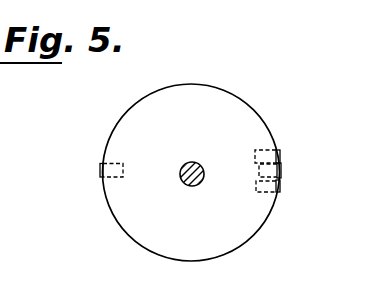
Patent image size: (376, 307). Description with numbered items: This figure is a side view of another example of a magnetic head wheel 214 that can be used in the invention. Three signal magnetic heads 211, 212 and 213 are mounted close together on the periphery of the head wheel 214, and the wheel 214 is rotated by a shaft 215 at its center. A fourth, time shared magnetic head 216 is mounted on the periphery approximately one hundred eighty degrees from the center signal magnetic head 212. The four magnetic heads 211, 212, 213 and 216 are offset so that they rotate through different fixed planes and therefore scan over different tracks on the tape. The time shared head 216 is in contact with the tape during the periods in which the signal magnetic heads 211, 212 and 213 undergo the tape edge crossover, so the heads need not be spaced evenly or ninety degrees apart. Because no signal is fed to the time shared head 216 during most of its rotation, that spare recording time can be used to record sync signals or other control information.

The signal magnetic head 211 is at (281, 152).
The center signal magnetic head 212 is at (282, 170).
The signal magnetic head 213 is at (282, 187).
The head wheel 214 is at (203, 84).
The shaft 215 is at (190, 161).
The time shared magnetic head 216 is at (100, 170).